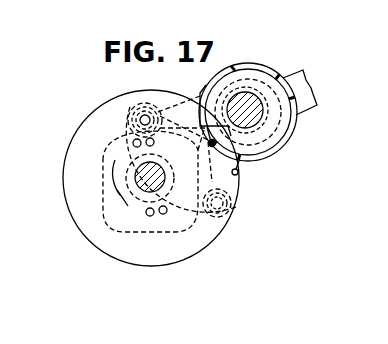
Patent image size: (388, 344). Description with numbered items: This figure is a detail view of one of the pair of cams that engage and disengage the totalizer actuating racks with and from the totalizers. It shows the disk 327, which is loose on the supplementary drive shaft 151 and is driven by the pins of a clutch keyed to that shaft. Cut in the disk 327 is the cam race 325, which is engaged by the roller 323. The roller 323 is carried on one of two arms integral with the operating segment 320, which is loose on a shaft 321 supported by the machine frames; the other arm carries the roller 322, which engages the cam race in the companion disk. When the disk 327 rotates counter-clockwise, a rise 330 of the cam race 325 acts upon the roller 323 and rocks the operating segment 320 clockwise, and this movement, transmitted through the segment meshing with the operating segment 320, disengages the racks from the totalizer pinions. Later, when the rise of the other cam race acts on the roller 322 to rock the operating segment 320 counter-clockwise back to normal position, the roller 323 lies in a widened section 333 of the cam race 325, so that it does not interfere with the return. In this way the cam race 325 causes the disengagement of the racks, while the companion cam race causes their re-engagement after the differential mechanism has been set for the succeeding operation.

The supplementary drive shaft 151 is at (150, 180).
The operating segment 320 is at (313, 92).
The shaft 321 is at (302, 124).
The roller 322 is at (156, 118).
The roller 323 is at (228, 212).
The cam race 325 is at (84, 150).
The disk 327 is at (100, 107).
The rise 330 is at (85, 219).
The widened section 333 is at (238, 173).